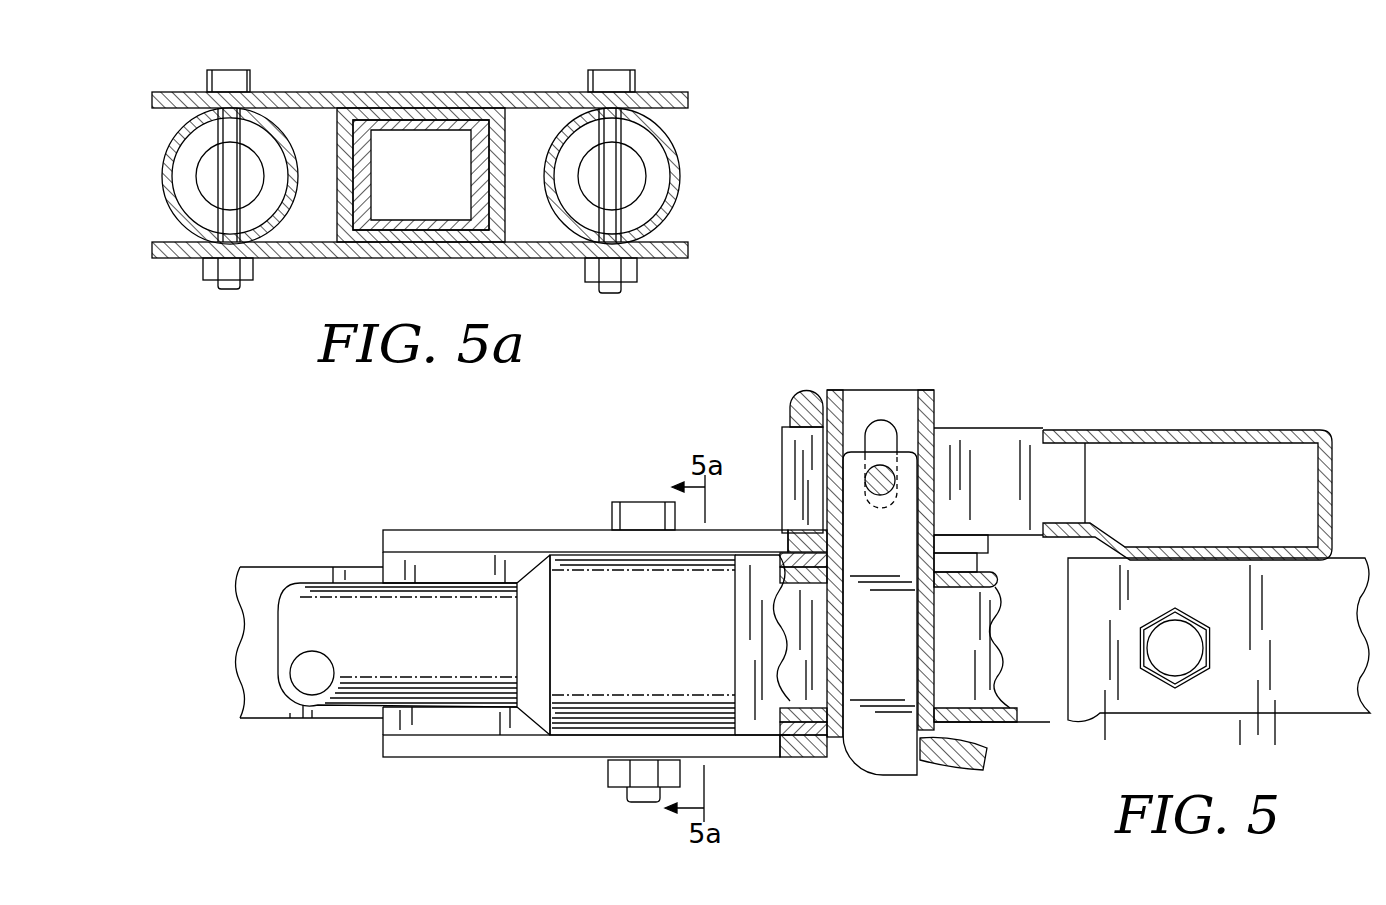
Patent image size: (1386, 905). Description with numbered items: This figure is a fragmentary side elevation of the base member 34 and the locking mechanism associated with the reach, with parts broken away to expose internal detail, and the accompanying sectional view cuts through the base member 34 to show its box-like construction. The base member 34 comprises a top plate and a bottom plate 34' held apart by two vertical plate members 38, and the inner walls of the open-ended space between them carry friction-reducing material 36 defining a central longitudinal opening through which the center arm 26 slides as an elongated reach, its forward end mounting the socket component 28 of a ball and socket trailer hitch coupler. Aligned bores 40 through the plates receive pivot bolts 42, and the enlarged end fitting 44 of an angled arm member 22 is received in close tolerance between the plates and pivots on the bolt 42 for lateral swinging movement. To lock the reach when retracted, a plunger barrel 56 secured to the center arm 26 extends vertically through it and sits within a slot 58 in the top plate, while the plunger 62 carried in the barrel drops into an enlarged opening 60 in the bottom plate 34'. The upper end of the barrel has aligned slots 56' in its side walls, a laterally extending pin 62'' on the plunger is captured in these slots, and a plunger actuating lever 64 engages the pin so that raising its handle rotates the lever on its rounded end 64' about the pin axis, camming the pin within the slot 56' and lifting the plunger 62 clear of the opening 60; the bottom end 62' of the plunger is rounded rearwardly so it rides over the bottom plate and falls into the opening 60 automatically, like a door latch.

In FIG. 5, the angled arm member 22 is at (363, 680).
In FIG. 5a, the center arm 26 is at (410, 232).
In FIG. 5, the center arm 26 is at (293, 565).
In FIG. 5, the socket component 28 is at (1303, 712).
In FIG. 5a, the base member 34 is at (433, 78).
In FIG. 5, the base member 34 is at (605, 514).
In FIG. 5a, the bottom plate 34' is at (437, 285).
In FIG. 5, the bottom plate 34' is at (605, 773).
In FIG. 5a, the friction-reducing material 36 is at (433, 120).
In FIG. 5, the friction-reducing material 36 is at (763, 556).
In FIG. 5a, the vertical plate member 38 is at (337, 130).
In FIG. 5, the vertical plate member 38 is at (437, 565).
In FIG. 5a, the aligned bore 40 is at (237, 92).
In FIG. 5a, the pivot bolt 42 is at (252, 78).
In FIG. 5, the pivot bolt 42 is at (665, 502).
In FIG. 5a, the end fitting 44 is at (172, 208).
In FIG. 5, the end fitting 44 is at (590, 707).
In FIG. 5, the plunger barrel 56 is at (914, 557).
In FIG. 5, the aligned slot 56' is at (888, 425).
In FIG. 5, the slot 58 is at (955, 540).
In FIG. 5, the enlarged opening 60 is at (841, 760).
In FIG. 5, the plunger 62 is at (901, 639).
In FIG. 5, the bottom end 62' is at (870, 794).
In FIG. 5, the laterally extending pin 62'' is at (883, 518).
In FIG. 5, the plunger actuating lever 64 is at (1187, 471).
In FIG. 5, the rounded end 64' is at (772, 462).